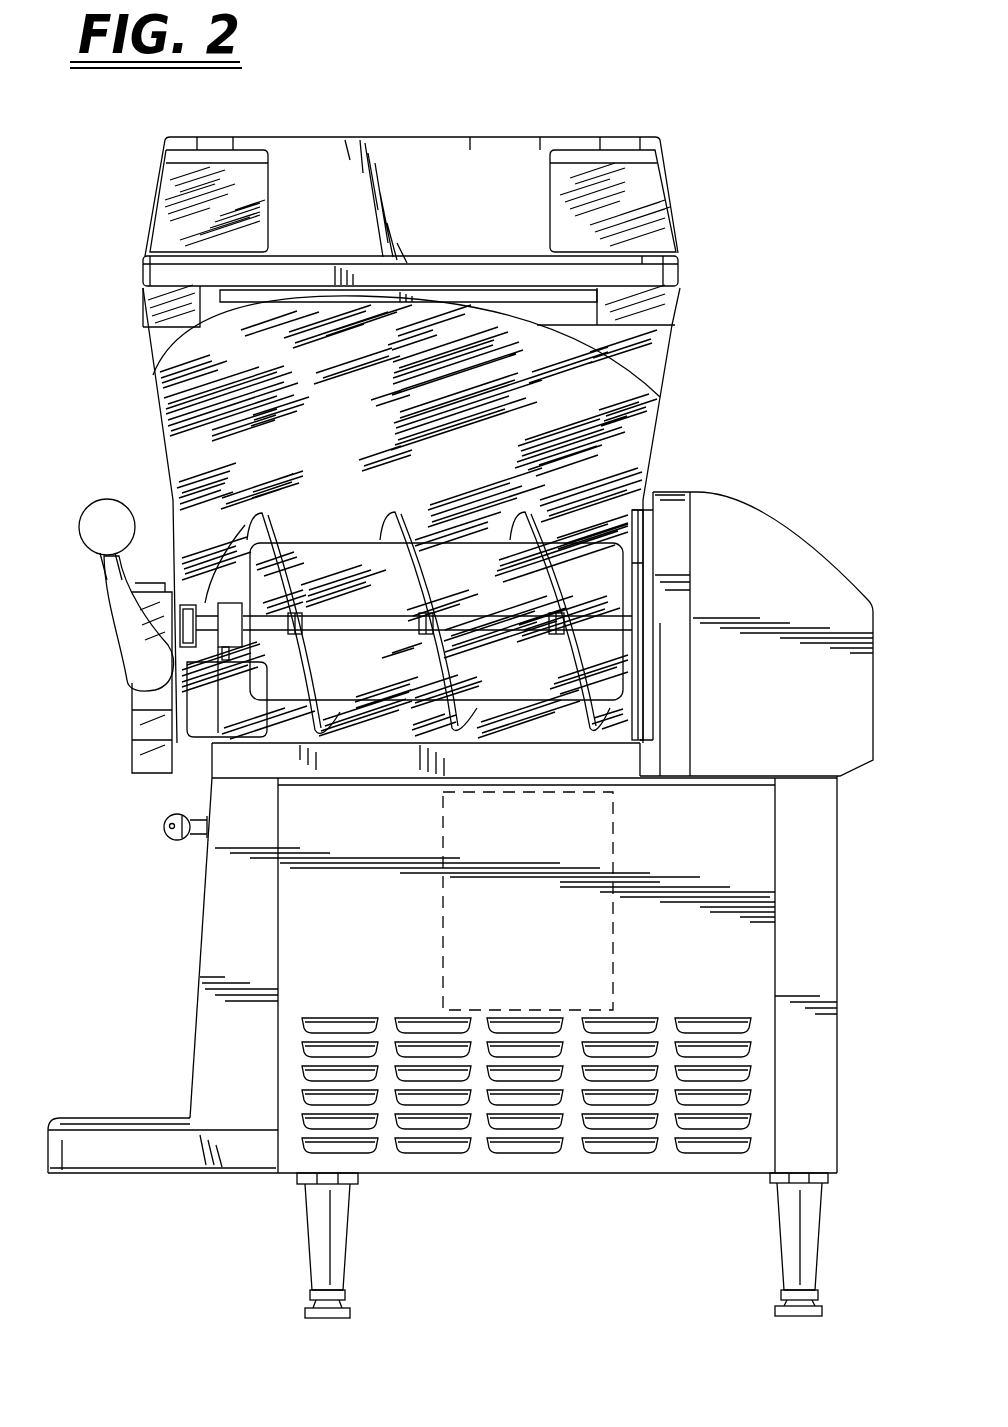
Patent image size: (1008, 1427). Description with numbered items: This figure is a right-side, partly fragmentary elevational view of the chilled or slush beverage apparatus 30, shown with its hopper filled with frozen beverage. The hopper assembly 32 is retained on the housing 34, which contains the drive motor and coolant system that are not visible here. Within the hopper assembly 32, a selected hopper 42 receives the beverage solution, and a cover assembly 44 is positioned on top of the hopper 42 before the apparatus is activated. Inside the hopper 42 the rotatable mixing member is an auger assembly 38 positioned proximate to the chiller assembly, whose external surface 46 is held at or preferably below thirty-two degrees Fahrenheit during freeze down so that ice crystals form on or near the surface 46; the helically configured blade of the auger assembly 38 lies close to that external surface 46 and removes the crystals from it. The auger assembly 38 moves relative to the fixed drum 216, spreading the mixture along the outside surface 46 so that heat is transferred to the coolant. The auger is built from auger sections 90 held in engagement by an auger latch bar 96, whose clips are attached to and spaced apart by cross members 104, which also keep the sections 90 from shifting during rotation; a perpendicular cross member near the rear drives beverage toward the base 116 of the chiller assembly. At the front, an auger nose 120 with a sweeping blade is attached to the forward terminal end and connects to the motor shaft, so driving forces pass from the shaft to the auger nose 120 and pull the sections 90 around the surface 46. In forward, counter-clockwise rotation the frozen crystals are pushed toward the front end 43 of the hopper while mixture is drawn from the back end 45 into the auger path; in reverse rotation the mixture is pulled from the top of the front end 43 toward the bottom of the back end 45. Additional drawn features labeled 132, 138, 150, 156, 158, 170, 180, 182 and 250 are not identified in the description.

The chilled or slush beverage apparatus 30 is at (778, 197).
The hopper assembly 32 is at (742, 270).
The housing 34 is at (840, 975).
The auger assembly 38 is at (243, 517).
The hopper 42 is at (661, 397).
The front end 43 is at (158, 426).
The cover assembly 44 is at (665, 150).
The back end 45 is at (655, 418).
The external surface 46 is at (327, 560).
The auger sections 90 is at (380, 532).
The auger latch bar 96 is at (461, 613).
The cross members 104 is at (363, 625).
The base 116 is at (600, 540).
The auger nose 120 is at (212, 592).
The lid top panel 132 is at (443, 152).
The lid flange 138 is at (553, 297).
The drip tray assembly 150 is at (80, 1083).
The drip tray 156 is at (127, 1167).
The drip tray top surface 158 is at (118, 1122).
The cabinet top plate 170 is at (363, 772).
The control knob 180 is at (208, 790).
The side panel 182 is at (197, 907).
The fixed drum 216 is at (307, 540).
The lid window 250 is at (650, 203).